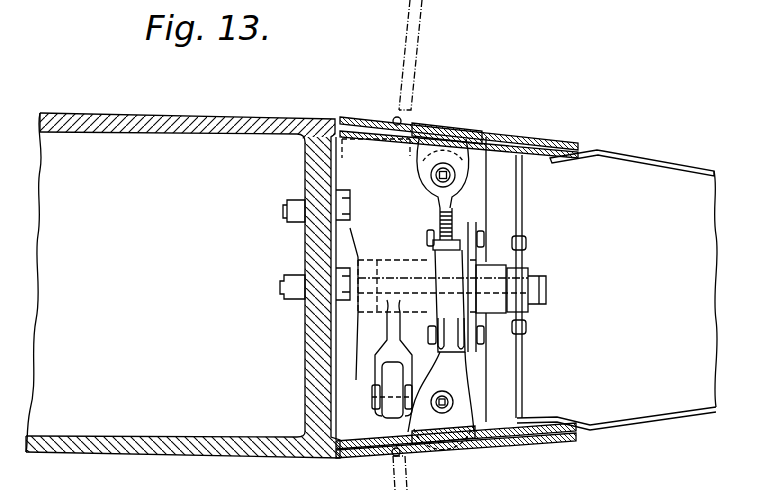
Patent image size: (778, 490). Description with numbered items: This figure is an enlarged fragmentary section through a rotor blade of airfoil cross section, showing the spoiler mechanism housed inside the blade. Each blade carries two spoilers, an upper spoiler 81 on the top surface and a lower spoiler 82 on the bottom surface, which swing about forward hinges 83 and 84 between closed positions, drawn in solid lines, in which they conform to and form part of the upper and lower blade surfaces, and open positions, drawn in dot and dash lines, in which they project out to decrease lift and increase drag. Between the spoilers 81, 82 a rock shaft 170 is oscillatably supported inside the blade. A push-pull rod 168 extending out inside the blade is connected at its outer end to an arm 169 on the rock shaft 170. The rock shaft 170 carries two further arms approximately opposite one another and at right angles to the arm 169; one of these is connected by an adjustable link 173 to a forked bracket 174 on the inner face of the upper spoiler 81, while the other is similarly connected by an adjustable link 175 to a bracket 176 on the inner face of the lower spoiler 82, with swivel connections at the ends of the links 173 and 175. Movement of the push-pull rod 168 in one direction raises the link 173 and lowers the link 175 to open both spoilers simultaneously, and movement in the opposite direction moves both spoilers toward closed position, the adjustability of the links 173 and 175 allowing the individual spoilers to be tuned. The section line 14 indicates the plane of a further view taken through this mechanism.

The section line 14- 14 is at (545, 107).
The upper spoiler 81 is at (540, 140).
The lower spoiler 82 is at (545, 438).
The hinge 83 is at (394, 119).
The hinge 84 is at (393, 456).
The push-pull rod 168 is at (380, 422).
The arm 169 is at (384, 347).
The rock shaft 170 is at (408, 259).
The adjustable link 173 is at (439, 214).
The forked bracket 174 is at (425, 174).
The adjustable link 175 is at (446, 375).
The bracket 176 is at (466, 420).